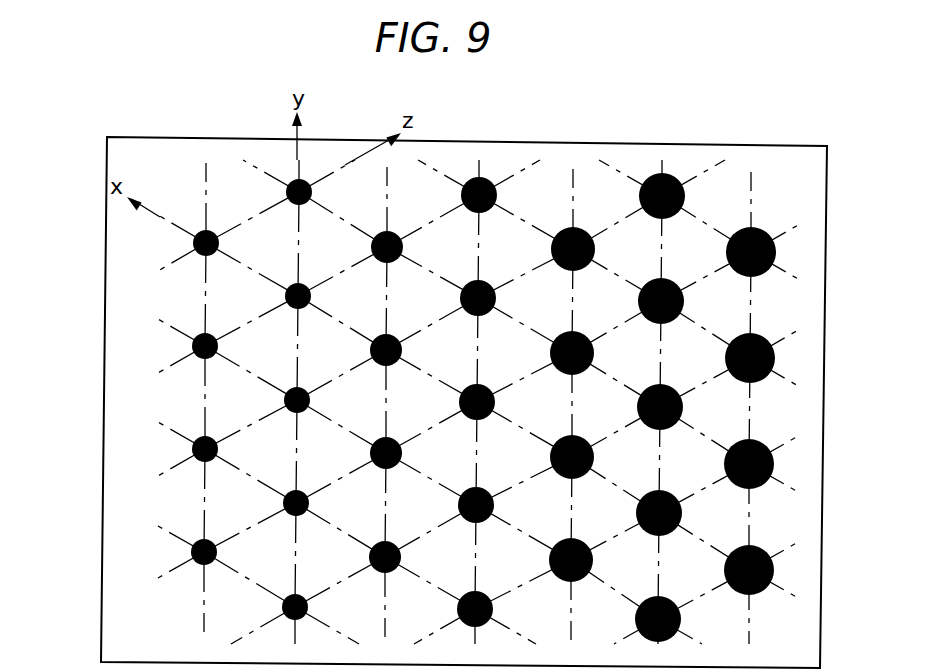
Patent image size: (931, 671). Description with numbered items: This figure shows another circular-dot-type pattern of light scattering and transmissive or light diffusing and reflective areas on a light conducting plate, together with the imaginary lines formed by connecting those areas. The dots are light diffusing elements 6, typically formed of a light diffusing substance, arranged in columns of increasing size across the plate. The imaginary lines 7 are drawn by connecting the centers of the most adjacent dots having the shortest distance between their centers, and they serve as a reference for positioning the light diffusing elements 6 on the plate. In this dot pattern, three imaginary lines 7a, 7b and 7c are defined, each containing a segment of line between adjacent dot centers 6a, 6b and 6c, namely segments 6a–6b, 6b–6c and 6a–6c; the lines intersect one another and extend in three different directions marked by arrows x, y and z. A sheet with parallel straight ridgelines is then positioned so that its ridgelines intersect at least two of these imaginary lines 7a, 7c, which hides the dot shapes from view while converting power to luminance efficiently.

The light diffusing elements 6 is at (498, 192).
The dot center 6a is at (200, 233).
The dot center 6b is at (312, 296).
The dot center 6c is at (293, 182).
The imaginary lines 7 is at (688, 176).
The imaginary line 7a is at (165, 218).
The imaginary line 7b is at (294, 245).
The imaginary line 7c is at (335, 171).